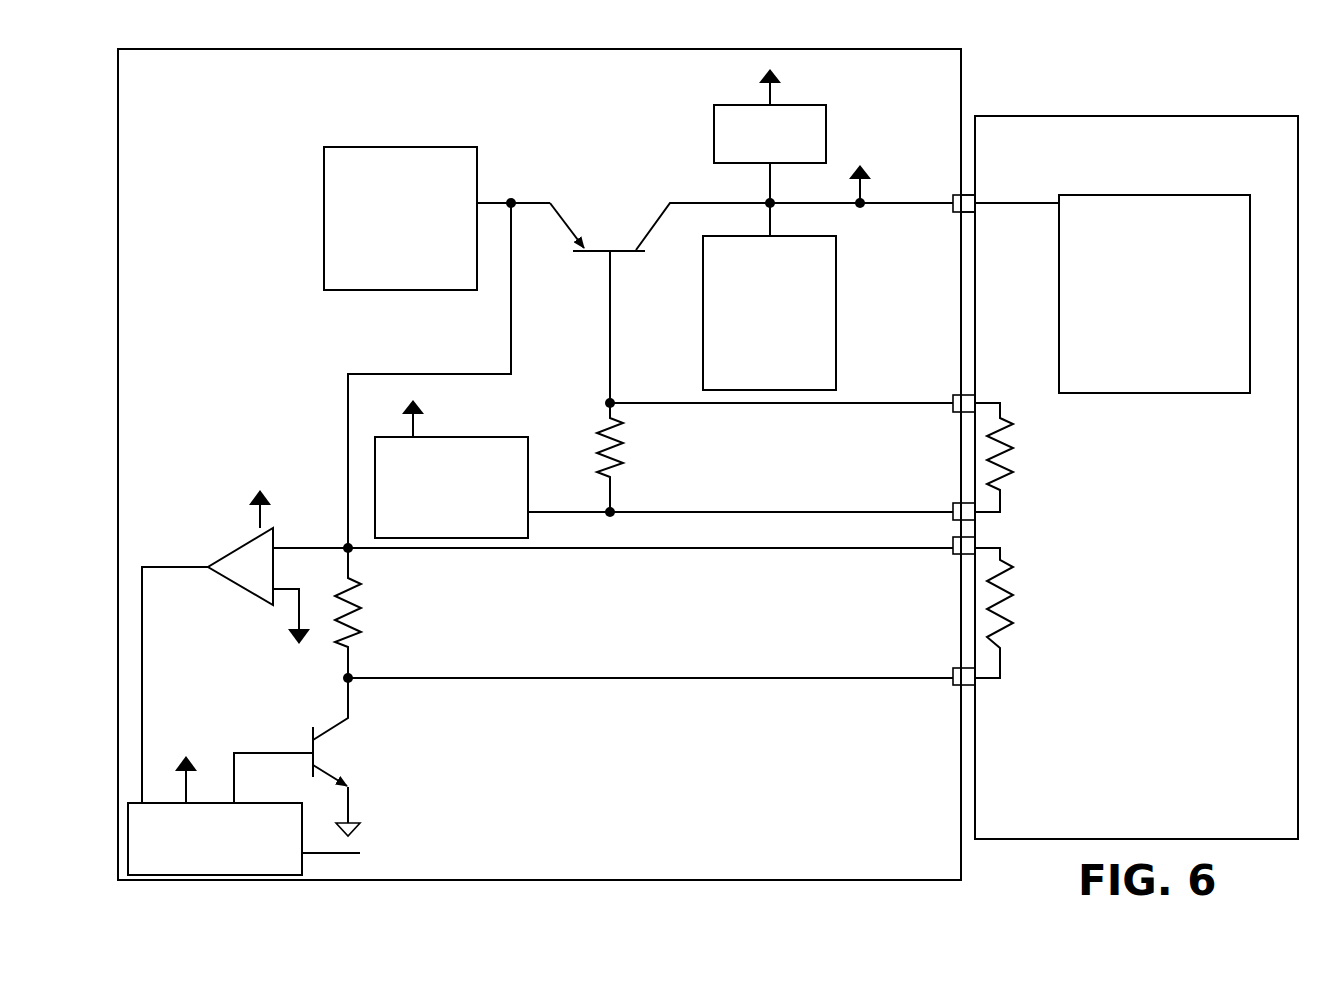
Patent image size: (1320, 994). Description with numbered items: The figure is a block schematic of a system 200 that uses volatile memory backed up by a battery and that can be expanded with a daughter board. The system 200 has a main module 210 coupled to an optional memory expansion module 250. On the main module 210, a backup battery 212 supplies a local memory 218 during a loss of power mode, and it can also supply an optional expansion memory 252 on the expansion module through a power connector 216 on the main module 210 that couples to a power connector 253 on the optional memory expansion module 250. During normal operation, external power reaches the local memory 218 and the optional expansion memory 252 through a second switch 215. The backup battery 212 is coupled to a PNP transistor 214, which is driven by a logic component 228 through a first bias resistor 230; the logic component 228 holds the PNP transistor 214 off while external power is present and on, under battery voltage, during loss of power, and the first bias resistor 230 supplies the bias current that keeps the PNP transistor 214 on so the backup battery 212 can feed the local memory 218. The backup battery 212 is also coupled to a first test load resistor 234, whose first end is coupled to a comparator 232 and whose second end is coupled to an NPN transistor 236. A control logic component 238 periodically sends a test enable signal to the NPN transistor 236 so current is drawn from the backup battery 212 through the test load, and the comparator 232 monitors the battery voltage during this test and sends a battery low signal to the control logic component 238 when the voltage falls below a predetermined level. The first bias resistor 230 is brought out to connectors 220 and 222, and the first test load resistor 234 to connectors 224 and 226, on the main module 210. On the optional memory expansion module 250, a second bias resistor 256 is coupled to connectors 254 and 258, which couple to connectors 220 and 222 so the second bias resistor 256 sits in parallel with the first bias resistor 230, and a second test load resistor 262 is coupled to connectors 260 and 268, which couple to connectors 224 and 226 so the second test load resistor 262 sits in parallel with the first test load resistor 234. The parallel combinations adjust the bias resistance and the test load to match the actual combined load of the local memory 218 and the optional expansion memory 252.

The system 200 is at (972, 66).
The main module 210 is at (665, 49).
The backup battery 212 is at (477, 178).
The PNP transistor 214 is at (614, 210).
The second switch 215 is at (800, 105).
The power connector 216 is at (950, 208).
The local memory 218 is at (836, 290).
The connector 220 is at (950, 410).
The connector 222 is at (950, 510).
The connector 224 is at (950, 556).
The connector 226 is at (950, 686).
The logic component 228 is at (505, 437).
The first bias resistor 230 is at (643, 445).
The comparator 232 is at (240, 606).
The first test load resistor 234 is at (388, 614).
The NPN transistor 236 is at (378, 750).
The control logic component 238 is at (269, 804).
The optional memory expansion module 250 is at (1118, 116).
The optional expansion memory 252 is at (1200, 195).
The power connector 253 is at (972, 212).
The connector 254 is at (978, 395).
The second bias resistor 256 is at (1040, 455).
The connector 258 is at (978, 507).
The connector 260 is at (978, 540).
The second test load resistor 262 is at (1037, 617).
The connector 268 is at (978, 680).